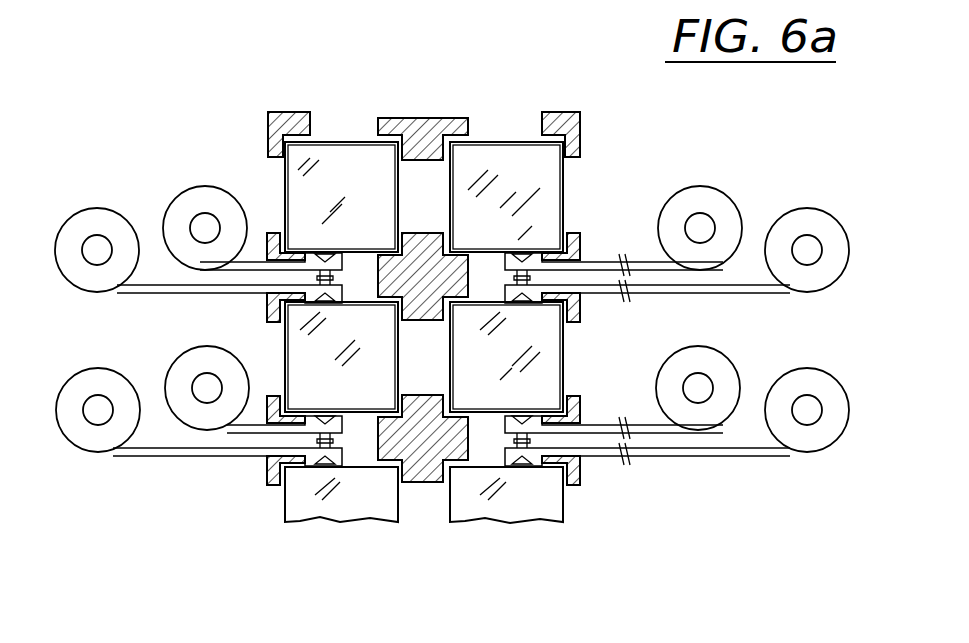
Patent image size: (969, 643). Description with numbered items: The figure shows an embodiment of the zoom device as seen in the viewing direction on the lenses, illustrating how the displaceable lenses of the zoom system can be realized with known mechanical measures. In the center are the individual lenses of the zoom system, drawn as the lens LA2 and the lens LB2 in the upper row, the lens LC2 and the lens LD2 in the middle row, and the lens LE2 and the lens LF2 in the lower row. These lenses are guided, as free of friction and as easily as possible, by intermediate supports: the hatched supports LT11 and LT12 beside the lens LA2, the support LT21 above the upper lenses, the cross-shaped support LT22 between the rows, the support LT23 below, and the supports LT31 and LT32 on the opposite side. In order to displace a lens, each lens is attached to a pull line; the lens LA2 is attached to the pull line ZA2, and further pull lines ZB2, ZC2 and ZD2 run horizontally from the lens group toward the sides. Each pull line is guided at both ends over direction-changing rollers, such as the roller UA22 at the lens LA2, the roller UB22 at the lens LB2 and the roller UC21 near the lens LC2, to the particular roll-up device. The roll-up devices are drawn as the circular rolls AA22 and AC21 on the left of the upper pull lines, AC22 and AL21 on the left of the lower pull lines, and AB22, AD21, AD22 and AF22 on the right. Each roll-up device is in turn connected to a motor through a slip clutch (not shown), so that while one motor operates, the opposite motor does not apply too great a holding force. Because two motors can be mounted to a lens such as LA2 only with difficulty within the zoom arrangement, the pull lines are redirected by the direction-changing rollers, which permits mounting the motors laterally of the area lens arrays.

The lens LA2 is at (333, 150).
The lens B2 LB2 is at (508, 152).
The lens C2 LC2 is at (300, 350).
The lens D2 LD2 is at (543, 378).
The lens E2 LE2 is at (300, 503).
The lens F2 LF2 is at (550, 503).
The intermediate support LT11 is at (268, 135).
The intermediate support LT12 is at (278, 232).
The intermediate support LT21 is at (408, 122).
The intermediate support LT22 is at (433, 247).
The lens carrier cross block LT23 is at (431, 458).
The lens carrier block LT31 is at (557, 124).
The lens carrier holder LT32 is at (577, 241).
The pull line ZA2 is at (249, 263).
The web B2 ZB2 is at (607, 264).
The web C2 ZC2 is at (158, 283).
The web D2 ZD2 is at (598, 292).
The direction-changing roller UA22 is at (328, 252).
The deflection element B22 UB22 is at (532, 250).
The deflection element C21 UC21 is at (327, 310).
The roll-up device AA22 is at (178, 200).
The reel B22 AB22 is at (711, 210).
The reel C21 AC21 is at (82, 232).
The reel C22 AC22 is at (185, 375).
The reel D21 AD21 is at (827, 228).
The reel D22 AD22 is at (702, 362).
The reel F22 AF22 is at (810, 383).
The reel L21 AL21 is at (98, 440).